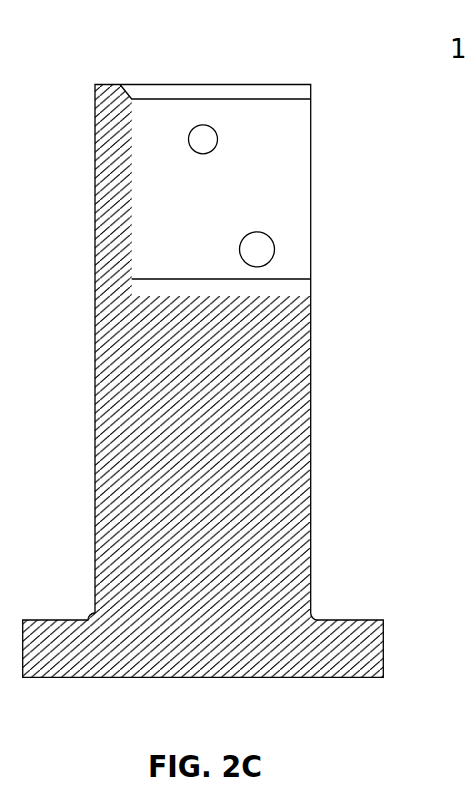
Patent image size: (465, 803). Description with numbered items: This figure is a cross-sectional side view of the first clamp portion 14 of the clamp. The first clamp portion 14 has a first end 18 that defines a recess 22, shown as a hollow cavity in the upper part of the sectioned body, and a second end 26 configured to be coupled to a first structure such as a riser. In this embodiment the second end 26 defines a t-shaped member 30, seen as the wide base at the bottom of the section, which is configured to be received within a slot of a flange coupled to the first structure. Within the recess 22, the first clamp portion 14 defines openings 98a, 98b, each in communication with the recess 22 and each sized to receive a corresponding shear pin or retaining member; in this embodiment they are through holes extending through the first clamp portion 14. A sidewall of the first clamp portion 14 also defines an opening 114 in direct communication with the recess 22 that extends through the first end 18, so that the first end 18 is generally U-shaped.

The first clamp portion 14 is at (104, 48).
The first end 18 is at (300, 61).
The recess 22 is at (229, 83).
The opening 114 is at (311, 211).
The opening 98a is at (207, 139).
The opening 98b is at (257, 249).
The second end 26 is at (355, 581).
The t-shaped member 30 is at (380, 658).